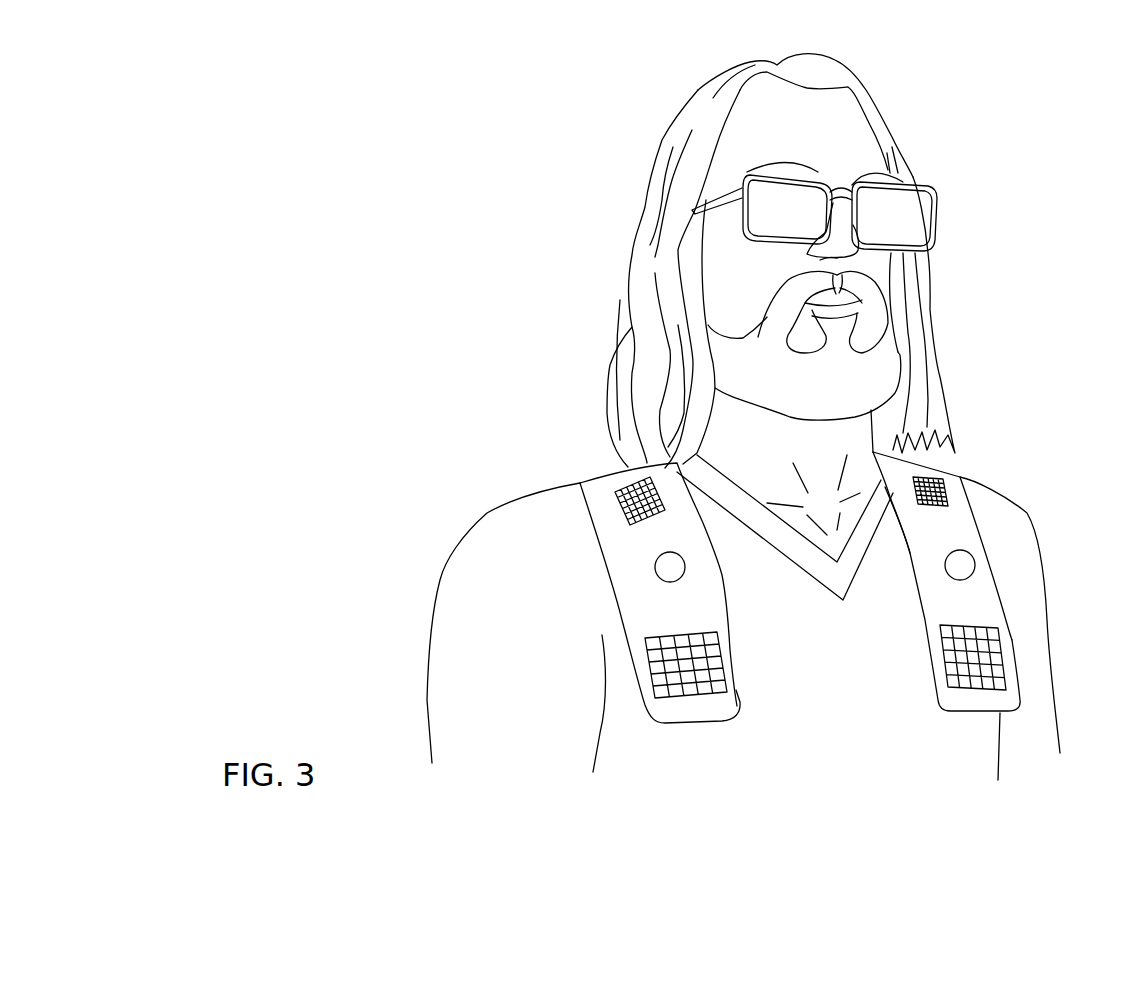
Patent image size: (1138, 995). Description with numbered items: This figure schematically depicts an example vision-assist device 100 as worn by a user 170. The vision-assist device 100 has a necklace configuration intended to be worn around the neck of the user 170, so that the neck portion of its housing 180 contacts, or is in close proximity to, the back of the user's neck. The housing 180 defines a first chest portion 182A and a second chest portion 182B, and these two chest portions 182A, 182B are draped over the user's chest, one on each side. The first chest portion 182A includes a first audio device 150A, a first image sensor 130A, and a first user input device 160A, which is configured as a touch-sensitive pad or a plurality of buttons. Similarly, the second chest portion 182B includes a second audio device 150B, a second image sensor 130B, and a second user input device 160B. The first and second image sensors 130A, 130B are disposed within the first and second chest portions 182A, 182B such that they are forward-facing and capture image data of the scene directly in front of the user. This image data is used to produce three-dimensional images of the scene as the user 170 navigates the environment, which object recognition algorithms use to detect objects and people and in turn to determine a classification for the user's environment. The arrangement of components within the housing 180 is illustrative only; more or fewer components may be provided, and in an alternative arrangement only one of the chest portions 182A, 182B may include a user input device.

The vision-assist device 100 is at (992, 503).
The first image sensor 130A is at (663, 567).
The second image sensor 130B is at (972, 565).
The first audio device 150A is at (628, 488).
The second audio device 150B is at (937, 478).
The first user input device 160A is at (723, 663).
The second user input device 160B is at (943, 660).
The user 170 is at (973, 157).
The housing 180 is at (1018, 603).
The first chest portion 182A is at (707, 607).
The second chest portion 182B is at (927, 603).